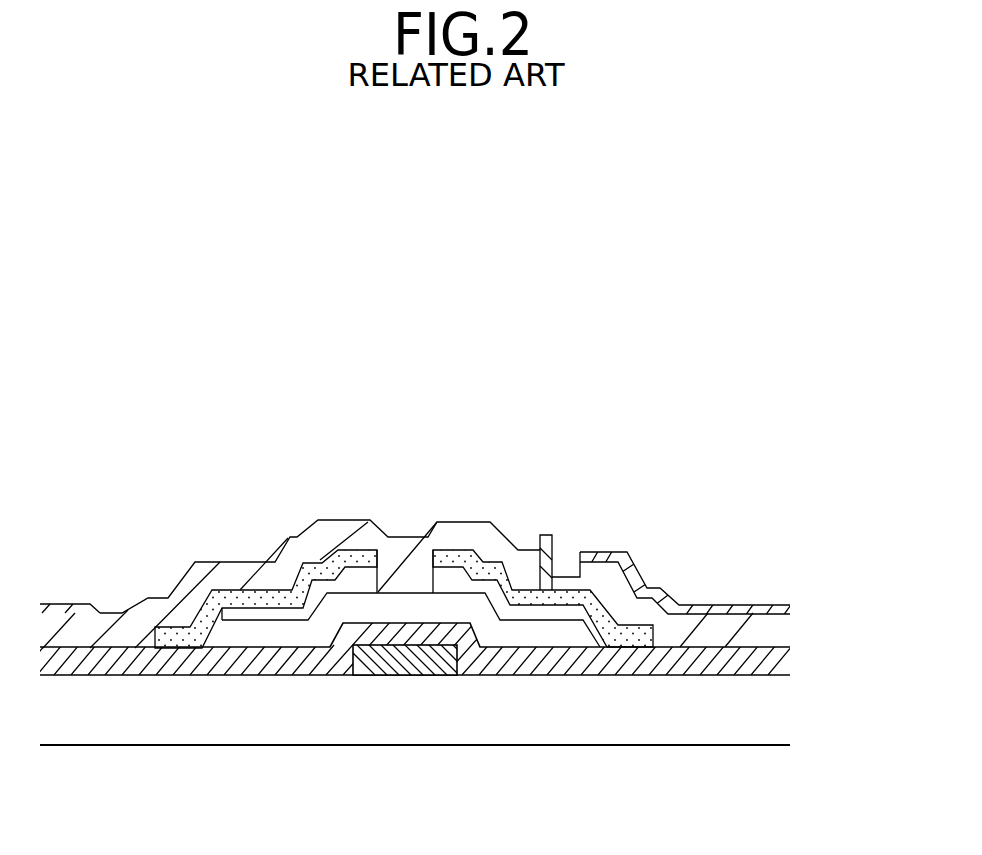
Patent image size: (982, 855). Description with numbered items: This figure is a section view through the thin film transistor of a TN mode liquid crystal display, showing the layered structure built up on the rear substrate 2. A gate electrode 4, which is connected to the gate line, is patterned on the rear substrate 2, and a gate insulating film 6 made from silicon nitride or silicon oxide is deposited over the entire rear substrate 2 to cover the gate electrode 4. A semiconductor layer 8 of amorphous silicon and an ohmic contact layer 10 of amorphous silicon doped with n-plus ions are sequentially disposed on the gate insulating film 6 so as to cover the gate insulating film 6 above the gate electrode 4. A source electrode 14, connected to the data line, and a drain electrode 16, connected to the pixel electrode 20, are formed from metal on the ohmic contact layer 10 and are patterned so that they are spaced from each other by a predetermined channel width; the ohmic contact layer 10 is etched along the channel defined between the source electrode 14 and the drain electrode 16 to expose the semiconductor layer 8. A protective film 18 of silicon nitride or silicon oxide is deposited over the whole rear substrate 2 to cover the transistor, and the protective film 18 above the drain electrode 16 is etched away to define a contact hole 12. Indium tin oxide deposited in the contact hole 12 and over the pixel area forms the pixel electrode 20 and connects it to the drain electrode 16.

The rear substrate 2 is at (780, 705).
The gate electrode 4 is at (383, 676).
The gate insulating film 6 is at (788, 663).
The semiconductor layer 8 is at (527, 632).
The ohmic contact layer 10 is at (508, 598).
The contact hole 12 is at (563, 563).
The source electrode 14 is at (227, 595).
The drain electrode 16 is at (500, 585).
The protective film 18 is at (312, 540).
The pixel electrode 20 is at (667, 590).